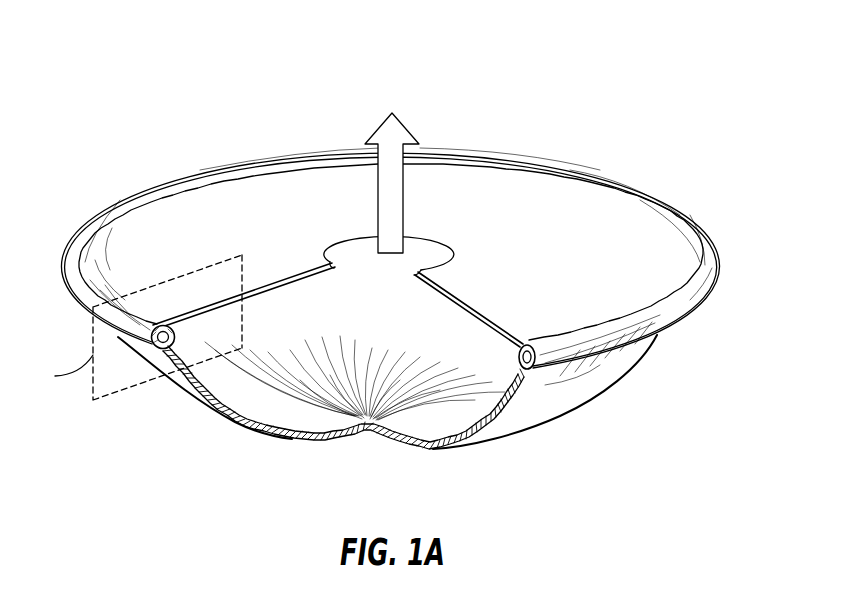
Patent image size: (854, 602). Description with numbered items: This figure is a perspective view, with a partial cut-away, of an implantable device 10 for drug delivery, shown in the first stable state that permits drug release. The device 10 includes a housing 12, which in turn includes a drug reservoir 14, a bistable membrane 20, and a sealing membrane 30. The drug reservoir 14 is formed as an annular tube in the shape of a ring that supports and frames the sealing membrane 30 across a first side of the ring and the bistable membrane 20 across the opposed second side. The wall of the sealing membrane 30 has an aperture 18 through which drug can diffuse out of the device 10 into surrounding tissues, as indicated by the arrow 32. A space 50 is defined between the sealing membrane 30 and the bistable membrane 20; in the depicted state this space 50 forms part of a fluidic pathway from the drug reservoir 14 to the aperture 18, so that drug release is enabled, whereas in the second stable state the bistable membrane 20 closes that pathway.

The implantable device 10 is at (123, 62).
The housing 12 is at (630, 400).
The drug reservoir 14 is at (160, 356).
The aperture 18 is at (358, 257).
The bistable membrane 20 is at (548, 398).
The sealing membrane 30 is at (603, 203).
The arrow 32 is at (408, 128).
The space 50 is at (471, 412).